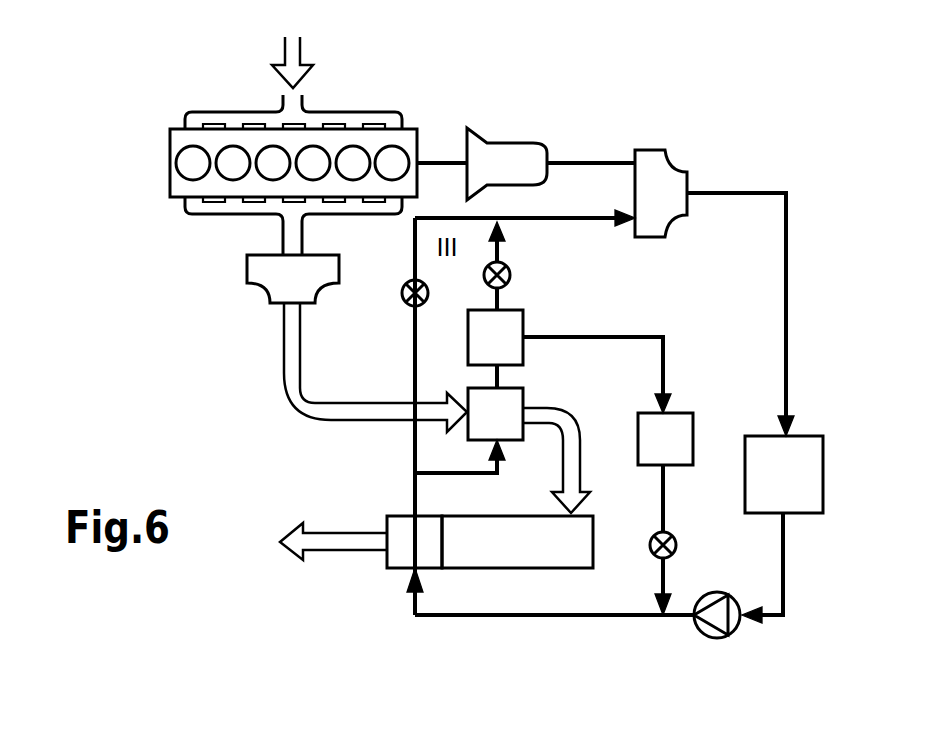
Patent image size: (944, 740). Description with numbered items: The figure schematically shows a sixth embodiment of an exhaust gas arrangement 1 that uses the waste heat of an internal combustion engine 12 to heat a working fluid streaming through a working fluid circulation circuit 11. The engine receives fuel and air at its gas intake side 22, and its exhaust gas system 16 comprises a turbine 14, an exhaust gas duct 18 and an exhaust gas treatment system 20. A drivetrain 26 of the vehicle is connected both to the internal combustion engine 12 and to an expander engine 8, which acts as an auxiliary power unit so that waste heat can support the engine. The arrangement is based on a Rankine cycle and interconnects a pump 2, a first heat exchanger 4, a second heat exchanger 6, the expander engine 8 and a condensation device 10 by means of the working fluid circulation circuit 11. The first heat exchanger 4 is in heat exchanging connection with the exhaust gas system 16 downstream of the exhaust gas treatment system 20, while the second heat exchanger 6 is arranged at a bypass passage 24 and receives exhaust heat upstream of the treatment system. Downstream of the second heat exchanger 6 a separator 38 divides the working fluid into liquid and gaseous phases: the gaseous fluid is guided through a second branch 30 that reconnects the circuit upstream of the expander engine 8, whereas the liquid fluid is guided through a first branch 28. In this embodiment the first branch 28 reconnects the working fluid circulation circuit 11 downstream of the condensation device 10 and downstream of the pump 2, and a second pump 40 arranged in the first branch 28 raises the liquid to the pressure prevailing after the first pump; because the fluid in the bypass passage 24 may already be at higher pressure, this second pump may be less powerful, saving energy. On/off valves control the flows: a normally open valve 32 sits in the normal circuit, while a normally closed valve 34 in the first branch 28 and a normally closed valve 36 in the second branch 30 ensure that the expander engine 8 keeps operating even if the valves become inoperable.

The exhaust gas arrangement 1 is at (815, 232).
The pump 2 is at (715, 593).
The first heat exchanger 4 is at (361, 565).
The second heat exchanger 6 is at (495, 414).
The expander engine 8 is at (617, 193).
The condensation device 10 is at (784, 474).
The working fluid circulation circuit 11 is at (565, 617).
The internal combustion engine 12 is at (170, 160).
The turbine 14 is at (293, 279).
The exhaust gas system 16 is at (293, 428).
The exhaust gas duct 18 is at (570, 395).
The exhaust gas treatment system 20 is at (517, 542).
The gas intake side 22 is at (292, 49).
The bypass passage 24 is at (447, 474).
The drivetrain 26 is at (482, 164).
The first branch 28 is at (644, 336).
The second branch 30 is at (506, 232).
The valve 32 is at (403, 300).
The valve 34 is at (674, 534).
The valve 36 is at (511, 277).
The separator 38 is at (495, 349).
The second pump 40 is at (665, 472).